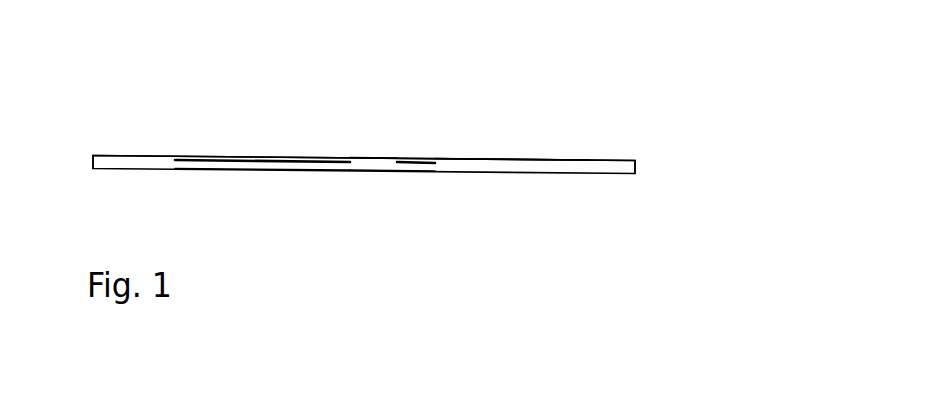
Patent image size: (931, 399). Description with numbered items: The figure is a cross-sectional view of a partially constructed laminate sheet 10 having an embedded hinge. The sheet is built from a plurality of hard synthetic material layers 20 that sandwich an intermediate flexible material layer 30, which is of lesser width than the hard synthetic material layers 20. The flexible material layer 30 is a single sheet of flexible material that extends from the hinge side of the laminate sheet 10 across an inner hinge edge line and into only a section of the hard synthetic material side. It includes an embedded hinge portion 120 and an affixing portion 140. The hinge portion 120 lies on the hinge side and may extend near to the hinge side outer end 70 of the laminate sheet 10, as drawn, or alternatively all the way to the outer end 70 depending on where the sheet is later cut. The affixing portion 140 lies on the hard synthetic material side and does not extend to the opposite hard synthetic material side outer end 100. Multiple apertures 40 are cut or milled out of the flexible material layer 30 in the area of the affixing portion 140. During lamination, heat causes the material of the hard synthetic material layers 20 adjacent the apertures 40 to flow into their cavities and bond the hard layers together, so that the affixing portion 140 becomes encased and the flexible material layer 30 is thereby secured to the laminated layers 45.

The laminate sheet 10 is at (533, 201).
The hard synthetic material side outer end 100 is at (635, 170).
The hinge side outer end 70 is at (93, 162).
The hard synthetic material layers 20 is at (593, 158).
The flexible material layer 30 is at (215, 160).
The apertures 40 is at (365, 158).
The laminated layers 45 is at (513, 157).
The hinge portion 120 is at (260, 162).
The affixing portion 140 is at (382, 168).